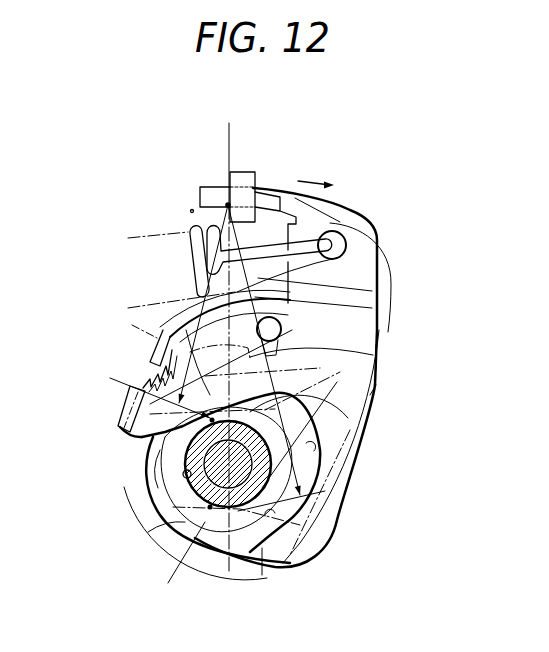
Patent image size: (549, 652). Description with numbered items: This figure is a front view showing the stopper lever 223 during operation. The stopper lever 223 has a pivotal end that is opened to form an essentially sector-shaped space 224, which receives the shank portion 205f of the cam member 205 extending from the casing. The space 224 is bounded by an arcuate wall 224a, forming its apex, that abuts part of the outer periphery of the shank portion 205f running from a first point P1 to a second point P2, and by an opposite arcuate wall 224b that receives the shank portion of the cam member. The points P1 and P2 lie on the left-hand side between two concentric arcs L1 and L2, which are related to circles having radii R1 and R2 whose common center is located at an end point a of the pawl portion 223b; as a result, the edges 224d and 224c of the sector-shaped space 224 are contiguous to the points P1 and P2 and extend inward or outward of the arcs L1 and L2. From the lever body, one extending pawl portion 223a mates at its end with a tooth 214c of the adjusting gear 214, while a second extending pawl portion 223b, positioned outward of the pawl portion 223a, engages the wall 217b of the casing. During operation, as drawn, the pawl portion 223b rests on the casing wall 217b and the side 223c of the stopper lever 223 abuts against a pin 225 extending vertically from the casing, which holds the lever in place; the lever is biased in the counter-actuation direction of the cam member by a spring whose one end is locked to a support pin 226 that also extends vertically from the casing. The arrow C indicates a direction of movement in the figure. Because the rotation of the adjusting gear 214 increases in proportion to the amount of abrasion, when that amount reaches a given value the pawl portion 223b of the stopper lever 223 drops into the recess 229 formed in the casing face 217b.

The cam member 205 is at (173, 473).
The shank portion 205f is at (148, 532).
The adjusting gear 214 is at (128, 403).
The tooth 214c is at (150, 385).
The wall of the casing 217b is at (190, 208).
The stopper lever 223 is at (380, 424).
The pawl portion 223a is at (152, 332).
The pawl portion 223b is at (213, 187).
The side 223c is at (372, 357).
The sector-shaped space 224 is at (327, 487).
The arcuate wall 224a is at (158, 488).
The opposite arcuate wall 224b is at (322, 474).
The edge 224c is at (262, 560).
The edge 224d is at (370, 402).
The pin 225 is at (283, 330).
The support pin 226 is at (192, 230).
The recess 229 is at (231, 203).
The end point a is at (232, 204).
The rotation direction C is at (325, 191).
The radius R1 is at (186, 330).
The radius R2 is at (352, 240).
The arc L1 is at (306, 425).
The arc L2 is at (333, 522).
The point P1 is at (173, 459).
The point P2 is at (177, 564).